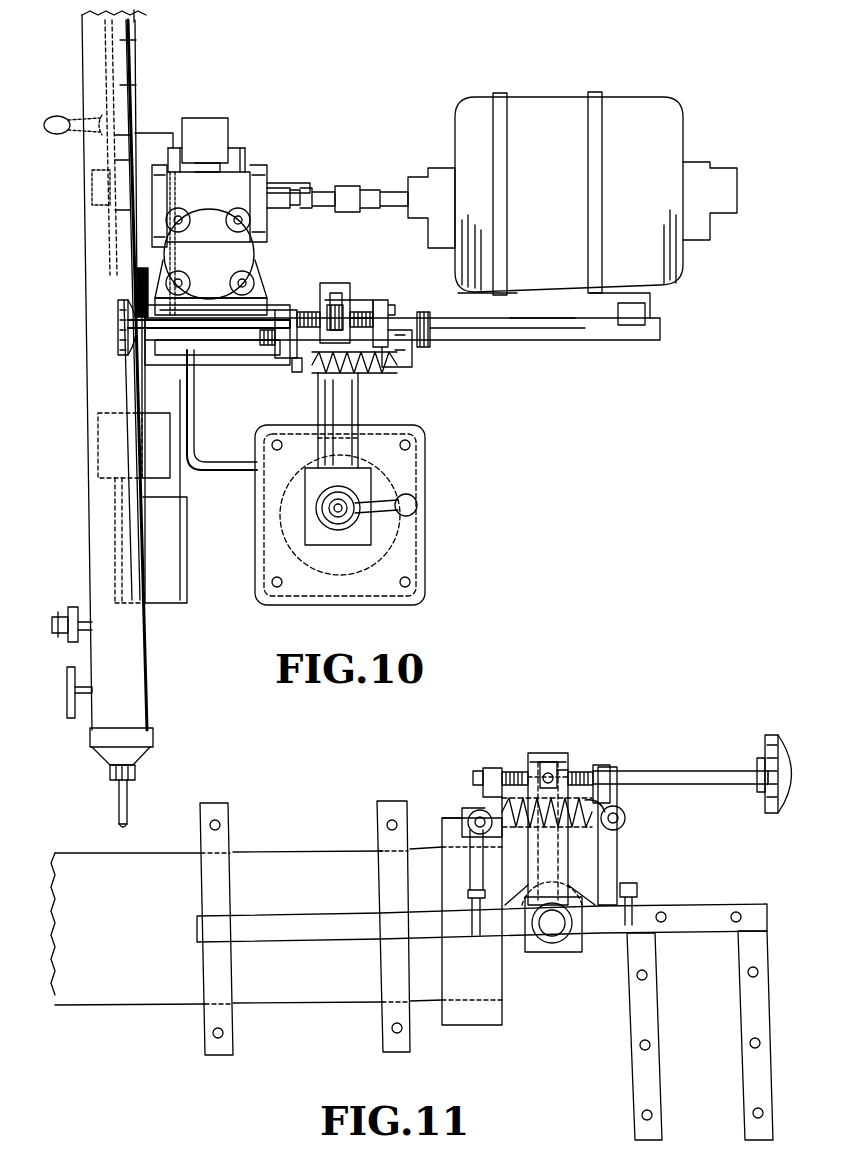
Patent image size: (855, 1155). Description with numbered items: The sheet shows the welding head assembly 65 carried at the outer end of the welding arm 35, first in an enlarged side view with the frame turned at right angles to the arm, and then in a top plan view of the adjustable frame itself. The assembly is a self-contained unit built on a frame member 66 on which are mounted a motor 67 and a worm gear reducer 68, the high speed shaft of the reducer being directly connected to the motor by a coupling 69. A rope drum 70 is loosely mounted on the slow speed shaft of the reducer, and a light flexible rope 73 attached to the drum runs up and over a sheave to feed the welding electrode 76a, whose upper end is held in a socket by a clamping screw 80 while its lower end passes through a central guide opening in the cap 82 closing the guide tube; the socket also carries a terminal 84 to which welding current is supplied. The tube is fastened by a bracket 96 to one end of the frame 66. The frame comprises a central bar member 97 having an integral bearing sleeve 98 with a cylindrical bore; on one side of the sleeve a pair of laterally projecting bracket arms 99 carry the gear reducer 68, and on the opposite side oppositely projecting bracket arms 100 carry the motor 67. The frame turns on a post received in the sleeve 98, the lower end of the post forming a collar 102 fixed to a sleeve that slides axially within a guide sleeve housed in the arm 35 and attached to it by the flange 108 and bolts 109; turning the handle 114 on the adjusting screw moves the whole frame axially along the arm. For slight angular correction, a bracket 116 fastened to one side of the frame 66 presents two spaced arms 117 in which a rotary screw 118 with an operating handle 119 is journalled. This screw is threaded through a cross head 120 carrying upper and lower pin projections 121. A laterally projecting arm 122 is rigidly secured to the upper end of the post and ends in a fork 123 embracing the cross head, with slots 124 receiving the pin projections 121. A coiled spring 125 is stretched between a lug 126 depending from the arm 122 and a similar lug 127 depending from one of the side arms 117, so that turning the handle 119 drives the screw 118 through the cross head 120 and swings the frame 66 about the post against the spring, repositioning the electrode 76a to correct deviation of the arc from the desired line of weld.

In FIG. 10, the arm 35 is at (400, 538).
In FIG. 11, the arm 35 is at (274, 860).
In FIG. 10, the welding head assembly 65 is at (460, 385).
In FIG. 10, the frame member 66 is at (680, 328).
In FIG. 11, the frame member 66 is at (680, 893).
In FIG. 10, the motor 67 is at (545, 97).
In FIG. 10, the worm gear reducer 68 is at (218, 138).
In FIG. 10, the coupling 69 is at (350, 187).
In FIG. 10, the rope drum 70 is at (105, 257).
In FIG. 10, the rope 73 is at (115, 15).
In FIG. 10, the welding electrode 76a is at (118, 802).
In FIG. 10, the clamping screw 80 is at (70, 698).
In FIG. 10, the cap 82 is at (95, 742).
In FIG. 10, the terminal 84 is at (72, 640).
In FIG. 10, the bracket 96 is at (155, 362).
In FIG. 10, the central bar member 97 is at (525, 340).
In FIG. 10, the bearing sleeve 98 is at (357, 400).
In FIG. 11, the bearing sleeve 98 is at (553, 950).
In FIG. 11, the bracket arms 99 is at (743, 1082).
In FIG. 10, the bracket arms 100 is at (572, 300).
In FIG. 11, the bracket arms 100 is at (375, 805).
In FIG. 10, the collar 102 is at (336, 547).
In FIG. 10, the flange 108 is at (405, 480).
In FIG. 11, the flange 108 is at (490, 1022).
In FIG. 10, the bolts 109 is at (410, 582).
In FIG. 10, the handle 114 is at (418, 504).
In FIG. 10, the bracket 116 is at (265, 358).
In FIG. 11, the bracket 116 is at (583, 858).
In FIG. 10, the arms 117 is at (256, 330).
In FIG. 11, the arms 117 is at (492, 766).
In FIG. 10, the rotary screw 118 is at (138, 345).
In FIG. 11, the rotary screw 118 is at (675, 767).
In FIG. 10, the operating handle 119 is at (118, 325).
In FIG. 11, the operating handle 119 is at (772, 733).
In FIG. 10, the cross head 120 is at (320, 303).
In FIG. 11, the cross head 120 is at (537, 752).
In FIG. 10, the pin projections 121 is at (330, 305).
In FIG. 11, the pin projections 121 is at (550, 772).
In FIG. 10, the arm 122 is at (340, 285).
In FIG. 11, the arm 122 is at (550, 829).
In FIG. 10, the fork 123 is at (368, 308).
In FIG. 11, the fork 123 is at (570, 758).
In FIG. 10, the slots 124 is at (305, 310).
In FIG. 11, the slots 124 is at (526, 768).
In FIG. 10, the coiled spring 125 is at (372, 376).
In FIG. 11, the coiled spring 125 is at (583, 795).
In FIG. 10, the lug 126 is at (298, 374).
In FIG. 11, the lug 126 is at (622, 833).
In FIG. 10, the lug 127 is at (412, 352).
In FIG. 11, the lug 127 is at (475, 808).